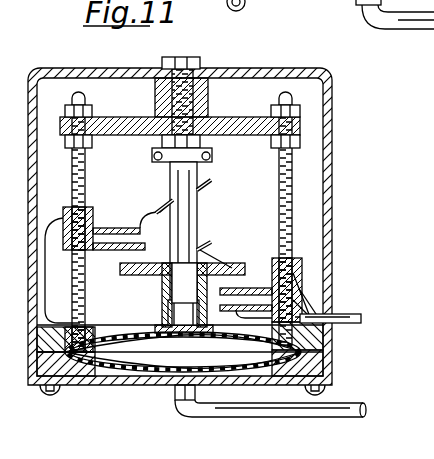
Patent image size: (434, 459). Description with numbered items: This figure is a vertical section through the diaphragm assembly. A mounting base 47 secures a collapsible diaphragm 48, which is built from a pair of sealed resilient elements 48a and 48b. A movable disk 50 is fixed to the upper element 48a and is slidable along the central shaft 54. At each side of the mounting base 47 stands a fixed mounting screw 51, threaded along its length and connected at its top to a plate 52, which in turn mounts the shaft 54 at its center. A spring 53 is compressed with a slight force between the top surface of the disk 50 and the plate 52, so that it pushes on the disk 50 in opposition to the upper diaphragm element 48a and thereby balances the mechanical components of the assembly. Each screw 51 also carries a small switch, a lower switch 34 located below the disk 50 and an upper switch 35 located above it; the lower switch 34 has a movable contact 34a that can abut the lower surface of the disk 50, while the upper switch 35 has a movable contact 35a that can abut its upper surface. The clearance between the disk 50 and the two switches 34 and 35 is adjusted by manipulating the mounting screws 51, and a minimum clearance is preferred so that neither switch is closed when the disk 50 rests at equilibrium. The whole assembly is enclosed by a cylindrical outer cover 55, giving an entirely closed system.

The lower switch 34 is at (269, 253).
The right clamp arms 34a is at (250, 290).
The upper switch 35 is at (107, 222).
The left clamp arms 35a is at (128, 249).
The mounting base 47 is at (332, 357).
The collapsible diaphragm 48 is at (125, 328).
The upper resilient element 48a is at (140, 338).
The lower resilient element 48b is at (242, 352).
The movable disk 50 is at (140, 276).
The mounting screw 51 is at (86, 178).
The plate 52 is at (131, 117).
The spring 53 is at (170, 203).
The shaft 54 is at (193, 222).
The cylindrical outer cover 55 is at (332, 227).